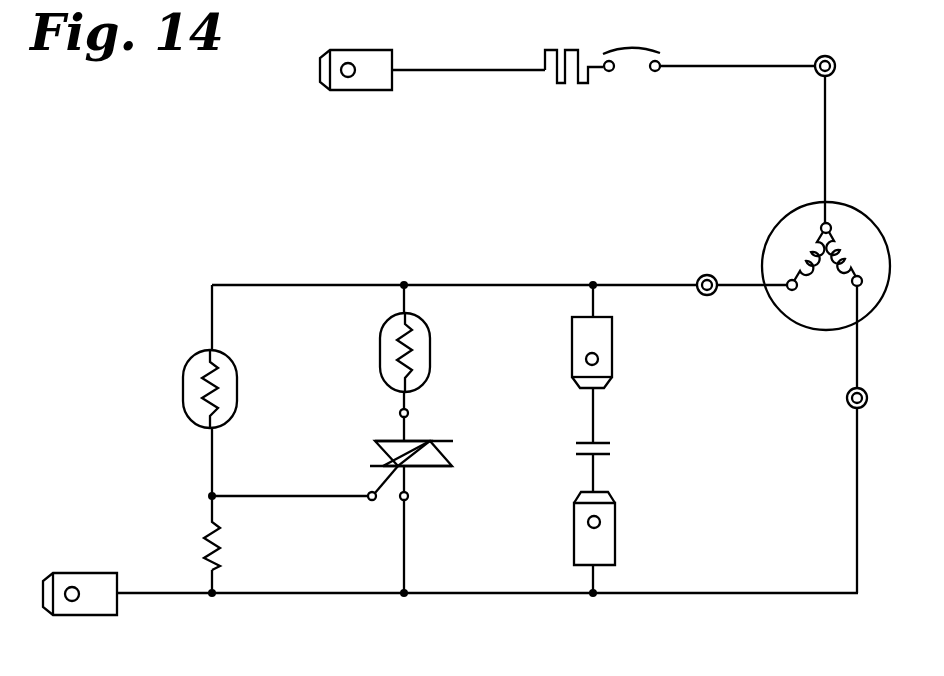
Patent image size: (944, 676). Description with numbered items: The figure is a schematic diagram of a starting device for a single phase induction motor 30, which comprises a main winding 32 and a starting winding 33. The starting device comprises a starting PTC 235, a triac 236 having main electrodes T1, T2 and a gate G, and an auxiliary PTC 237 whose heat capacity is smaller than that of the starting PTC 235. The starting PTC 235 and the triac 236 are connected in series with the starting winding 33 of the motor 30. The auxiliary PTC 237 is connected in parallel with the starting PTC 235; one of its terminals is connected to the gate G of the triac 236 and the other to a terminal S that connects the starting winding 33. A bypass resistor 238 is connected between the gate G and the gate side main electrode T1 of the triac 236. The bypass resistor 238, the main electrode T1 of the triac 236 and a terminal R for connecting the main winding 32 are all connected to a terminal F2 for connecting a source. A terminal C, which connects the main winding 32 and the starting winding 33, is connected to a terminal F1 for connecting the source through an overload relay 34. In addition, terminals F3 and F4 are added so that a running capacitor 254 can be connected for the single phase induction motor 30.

The terminal for connecting the source F1 is at (392, 56).
The overload relay 34 is at (606, 74).
The terminal for connecting main winding and starting winding C is at (831, 62).
The terminal for connecting starting winding S is at (711, 282).
The terminal for connecting main winding R is at (866, 395).
The single phase induction motor 30 is at (792, 326).
The starting winding 33 is at (808, 246).
The main winding 32 is at (844, 246).
The auxiliary PTC 237 is at (238, 372).
The bypass resistor 238 is at (220, 540).
The terminal for connecting the source F2 is at (100, 573).
The starting PTC 235 is at (431, 342).
The main electrode of triac T2 is at (398, 413).
The triac 236 is at (454, 456).
The gate of triac G is at (368, 492).
The gate side main electrode of triac T1 is at (410, 496).
The terminal for connecting running capacitor F3 is at (613, 350).
The running capacitor 254 is at (610, 455).
The terminal for connecting running capacitor F4 is at (616, 530).